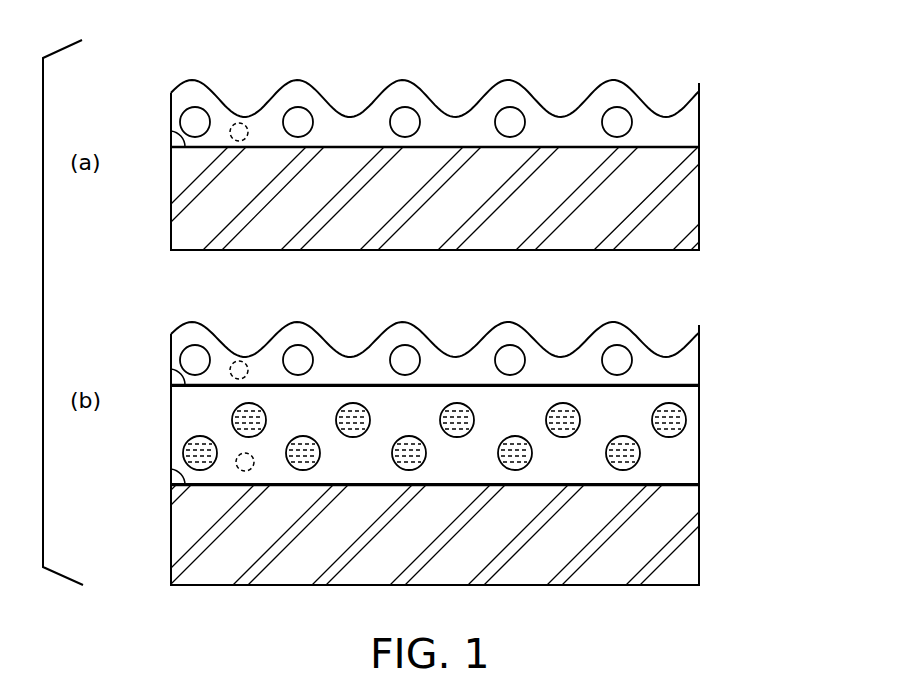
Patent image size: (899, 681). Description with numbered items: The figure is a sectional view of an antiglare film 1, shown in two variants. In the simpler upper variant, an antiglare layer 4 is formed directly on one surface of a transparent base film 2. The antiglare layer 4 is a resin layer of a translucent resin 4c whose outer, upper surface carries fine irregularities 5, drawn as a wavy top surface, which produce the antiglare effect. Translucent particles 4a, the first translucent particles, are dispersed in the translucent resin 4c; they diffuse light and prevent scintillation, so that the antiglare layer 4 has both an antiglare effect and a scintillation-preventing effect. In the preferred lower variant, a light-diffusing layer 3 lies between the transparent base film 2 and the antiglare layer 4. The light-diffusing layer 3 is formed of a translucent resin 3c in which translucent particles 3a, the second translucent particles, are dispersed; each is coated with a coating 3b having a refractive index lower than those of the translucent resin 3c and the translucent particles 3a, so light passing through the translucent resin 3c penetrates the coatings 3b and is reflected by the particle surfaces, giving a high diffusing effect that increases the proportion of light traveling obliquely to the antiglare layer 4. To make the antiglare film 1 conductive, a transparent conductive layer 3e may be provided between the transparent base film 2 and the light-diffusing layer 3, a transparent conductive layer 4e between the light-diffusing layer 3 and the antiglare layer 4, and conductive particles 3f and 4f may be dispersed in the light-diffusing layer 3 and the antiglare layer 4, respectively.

The antiglare film 1 is at (800, 157).
The transparent base film 2 is at (670, 196).
The light-diffusing layer 3 is at (672, 450).
The translucent particles 3a is at (680, 397).
The coatings 3b is at (690, 418).
The translucent resin 3c is at (672, 472).
The transparent conductive layer 3e is at (167, 467).
The conductive particles 3f is at (240, 455).
The antiglare layer 4 is at (670, 134).
The translucent particles 4a is at (613, 125).
The translucent resin 4c is at (330, 120).
The transparent conductive layer 4e is at (167, 131).
The conductive particles 4f is at (242, 124).
The fine irregularities 5 is at (642, 68).